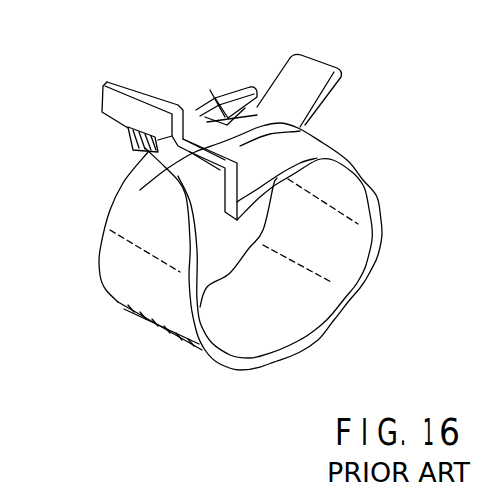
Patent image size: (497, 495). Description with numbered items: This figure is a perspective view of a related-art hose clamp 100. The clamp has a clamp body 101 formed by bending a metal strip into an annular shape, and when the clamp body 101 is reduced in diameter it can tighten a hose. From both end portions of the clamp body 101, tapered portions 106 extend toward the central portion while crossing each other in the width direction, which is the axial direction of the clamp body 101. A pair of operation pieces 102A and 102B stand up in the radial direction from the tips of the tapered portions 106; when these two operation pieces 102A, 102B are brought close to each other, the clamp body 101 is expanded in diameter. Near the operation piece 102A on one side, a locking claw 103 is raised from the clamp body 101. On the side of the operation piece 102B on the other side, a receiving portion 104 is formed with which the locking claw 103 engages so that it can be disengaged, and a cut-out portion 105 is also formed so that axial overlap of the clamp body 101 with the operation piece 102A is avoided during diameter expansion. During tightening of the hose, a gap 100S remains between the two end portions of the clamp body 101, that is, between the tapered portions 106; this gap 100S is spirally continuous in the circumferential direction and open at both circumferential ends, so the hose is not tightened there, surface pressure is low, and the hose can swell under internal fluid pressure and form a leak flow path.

The hose clamp 100 is at (375, 144).
The gap 100S is at (210, 90).
The clamp body 101 is at (297, 318).
The operation piece 102A is at (307, 78).
The operation piece 102B is at (120, 79).
The locking claw 103 is at (238, 82).
The receiving portion 104 is at (128, 150).
The cut-out portion 105 is at (140, 190).
The tapered portions 106 is at (187, 307).